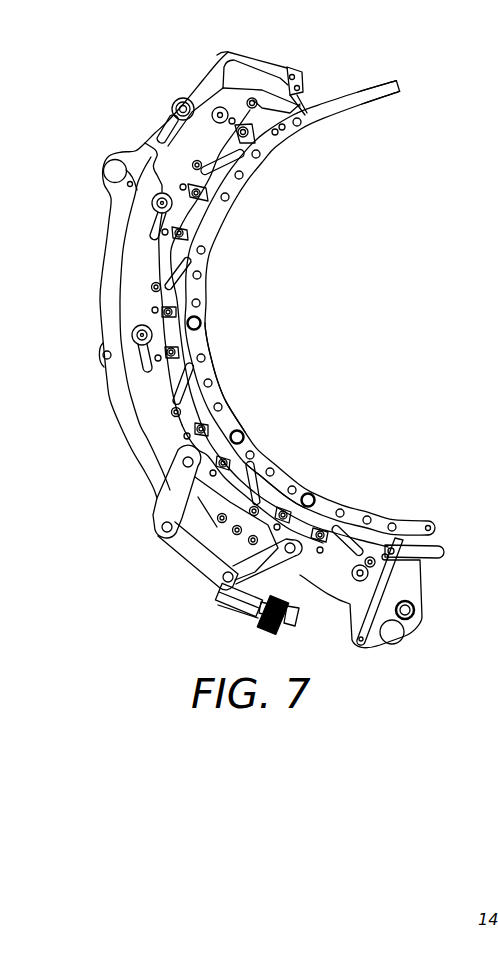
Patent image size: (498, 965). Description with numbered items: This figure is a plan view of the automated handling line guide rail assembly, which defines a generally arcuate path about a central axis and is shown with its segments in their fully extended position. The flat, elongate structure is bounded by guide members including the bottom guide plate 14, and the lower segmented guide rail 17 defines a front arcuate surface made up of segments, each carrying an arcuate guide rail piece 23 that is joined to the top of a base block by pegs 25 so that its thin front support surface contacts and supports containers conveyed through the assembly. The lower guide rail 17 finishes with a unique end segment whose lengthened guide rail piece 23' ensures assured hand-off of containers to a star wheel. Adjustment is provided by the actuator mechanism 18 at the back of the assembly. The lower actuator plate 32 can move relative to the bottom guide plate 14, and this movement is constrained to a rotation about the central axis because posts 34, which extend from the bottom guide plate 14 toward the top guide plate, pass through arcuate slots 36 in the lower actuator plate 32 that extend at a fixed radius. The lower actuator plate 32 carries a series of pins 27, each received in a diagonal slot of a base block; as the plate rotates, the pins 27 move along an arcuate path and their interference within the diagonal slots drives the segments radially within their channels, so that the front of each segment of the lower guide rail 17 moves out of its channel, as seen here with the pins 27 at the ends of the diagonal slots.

The bottom guide plate 14 is at (203, 82).
The lower segmented guide rail 17 is at (331, 116).
The actuator mechanism 18 is at (172, 569).
The guide rail piece 23 is at (310, 308).
The lengthened guide rail piece 23' is at (377, 72).
The pegs 25 is at (218, 409).
The pins 27 is at (297, 495).
The lower actuator plate 32 is at (240, 92).
The posts 34 is at (155, 162).
The arcuate slots 36 is at (152, 227).